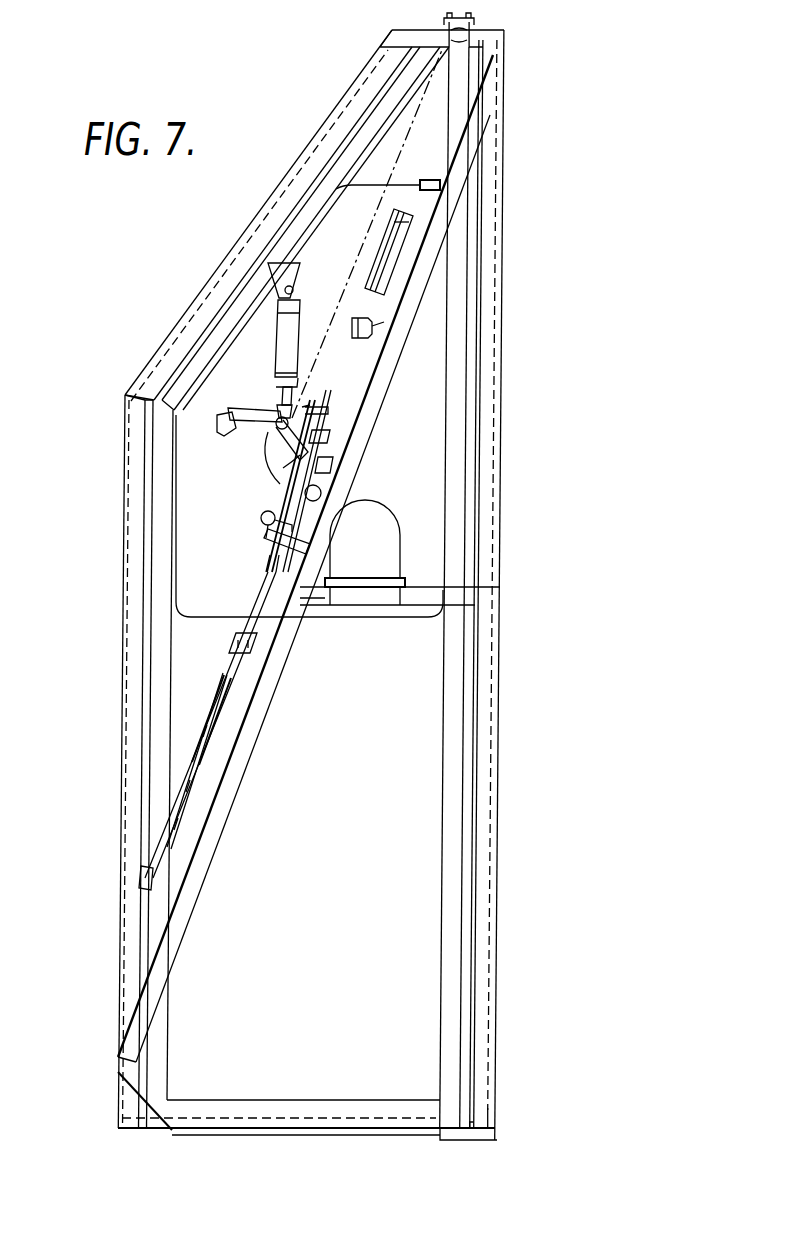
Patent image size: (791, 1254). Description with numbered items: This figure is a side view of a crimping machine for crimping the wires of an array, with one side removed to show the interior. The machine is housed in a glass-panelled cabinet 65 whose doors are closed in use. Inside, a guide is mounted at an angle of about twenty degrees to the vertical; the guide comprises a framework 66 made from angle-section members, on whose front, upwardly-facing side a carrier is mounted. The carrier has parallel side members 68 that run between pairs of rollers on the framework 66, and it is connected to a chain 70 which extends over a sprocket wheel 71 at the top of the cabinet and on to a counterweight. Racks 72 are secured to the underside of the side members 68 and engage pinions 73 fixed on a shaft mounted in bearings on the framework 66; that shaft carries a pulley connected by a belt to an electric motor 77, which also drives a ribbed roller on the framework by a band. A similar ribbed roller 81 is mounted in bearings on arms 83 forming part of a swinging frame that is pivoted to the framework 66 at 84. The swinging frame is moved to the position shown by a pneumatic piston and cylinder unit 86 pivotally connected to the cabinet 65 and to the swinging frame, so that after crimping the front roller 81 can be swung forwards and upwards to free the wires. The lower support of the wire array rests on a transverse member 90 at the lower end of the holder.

The glass-panelled cabinet 65 is at (485, 533).
The framework 66 is at (250, 732).
The side members 68 is at (253, 590).
The chain 70 is at (376, 252).
The sprocket wheel 71 is at (456, 38).
The racks 72 is at (178, 844).
The pinions 73 is at (321, 492).
The electric motor 77 is at (370, 513).
The roller 81 is at (228, 434).
The arms 83 is at (246, 416).
The pivot 84 is at (297, 457).
The pneumatic piston and cylinder unit 86 is at (291, 330).
The transverse member 90 is at (140, 876).